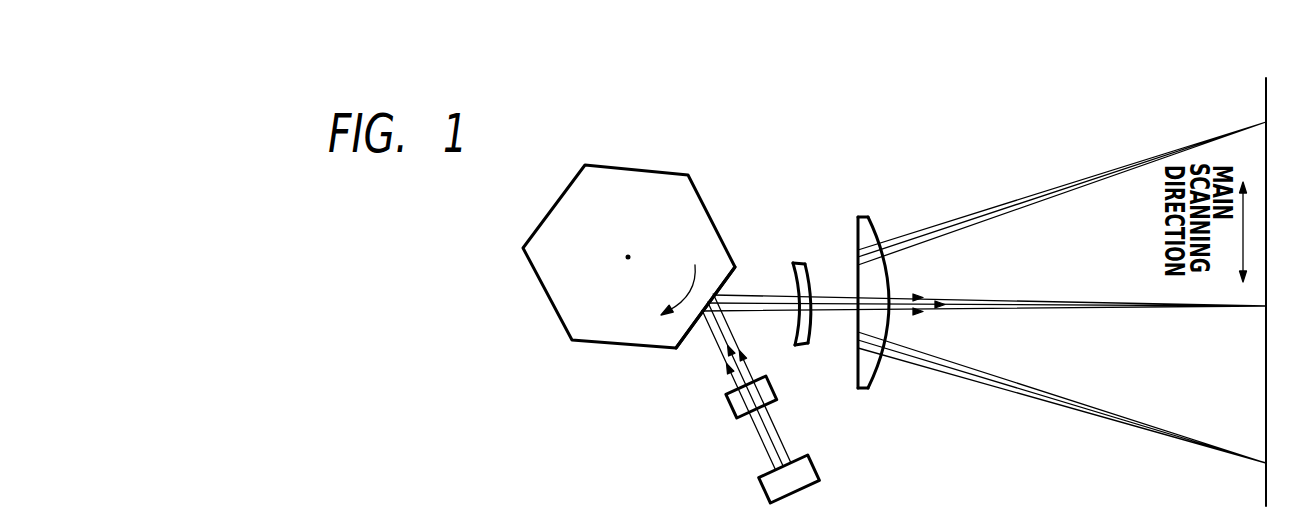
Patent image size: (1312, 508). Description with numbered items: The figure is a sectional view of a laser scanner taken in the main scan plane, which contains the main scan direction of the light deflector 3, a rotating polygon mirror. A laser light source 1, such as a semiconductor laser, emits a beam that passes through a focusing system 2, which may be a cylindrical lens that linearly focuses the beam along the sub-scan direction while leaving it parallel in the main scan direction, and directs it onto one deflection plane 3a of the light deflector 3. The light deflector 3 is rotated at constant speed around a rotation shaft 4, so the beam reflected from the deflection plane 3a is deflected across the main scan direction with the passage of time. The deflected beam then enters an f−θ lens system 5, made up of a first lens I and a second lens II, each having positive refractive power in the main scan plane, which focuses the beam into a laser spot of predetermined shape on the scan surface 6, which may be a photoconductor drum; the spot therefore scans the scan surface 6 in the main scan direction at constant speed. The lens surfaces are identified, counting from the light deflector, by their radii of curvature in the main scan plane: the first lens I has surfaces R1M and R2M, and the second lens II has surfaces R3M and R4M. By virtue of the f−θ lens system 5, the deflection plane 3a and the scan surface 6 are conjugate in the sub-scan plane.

The laser light source 1 is at (810, 473).
The focusing system 2 is at (730, 405).
The light deflector 3 is at (693, 192).
The deflection plane 3a is at (693, 337).
The rotation shaft 4 is at (627, 257).
The f−θ lens system 5 is at (877, 161).
The scan surface 6 is at (1265, 93).
The first lens I is at (818, 294).
The second lens II is at (905, 305).
The radius of curvature of first lens surface in main scan plane R1M is at (793, 327).
The radius of curvature of second lens surface in main scan plane R2M is at (807, 330).
The radius of curvature of third lens surface in main scan plane R3M is at (872, 386).
The radius of curvature of fourth lens surface in main scan plane R4M is at (873, 373).